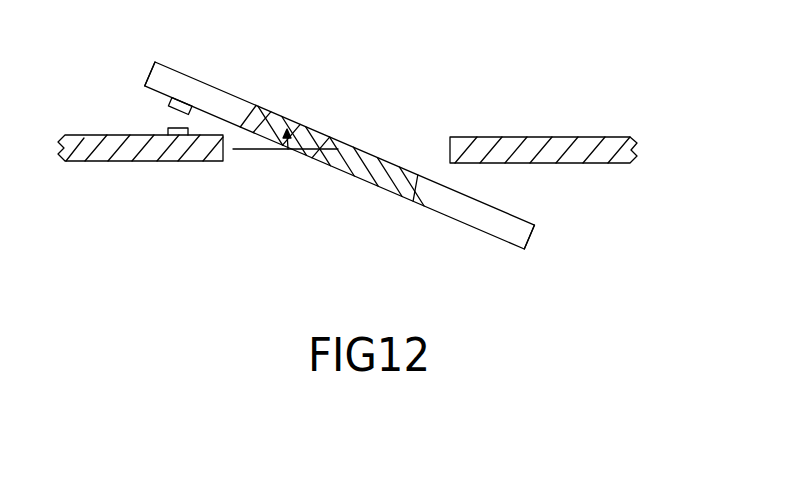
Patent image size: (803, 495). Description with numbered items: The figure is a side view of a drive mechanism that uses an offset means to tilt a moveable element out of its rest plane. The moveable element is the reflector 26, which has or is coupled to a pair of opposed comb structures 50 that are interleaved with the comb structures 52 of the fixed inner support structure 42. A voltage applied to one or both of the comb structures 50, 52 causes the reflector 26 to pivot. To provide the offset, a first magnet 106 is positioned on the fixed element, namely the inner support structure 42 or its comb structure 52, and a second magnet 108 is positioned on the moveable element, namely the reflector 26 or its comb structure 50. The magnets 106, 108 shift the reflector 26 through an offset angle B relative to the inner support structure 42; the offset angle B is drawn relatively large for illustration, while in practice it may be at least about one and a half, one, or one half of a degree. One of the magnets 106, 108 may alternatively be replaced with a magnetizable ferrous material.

The reflector 26 is at (372, 162).
The inner support structure 42 is at (376, 170).
The comb structures 50 is at (165, 77).
The comb structures 52 is at (198, 148).
The first magnet 106 is at (180, 133).
The second magnet 108 is at (192, 102).
The offset angle B is at (308, 150).